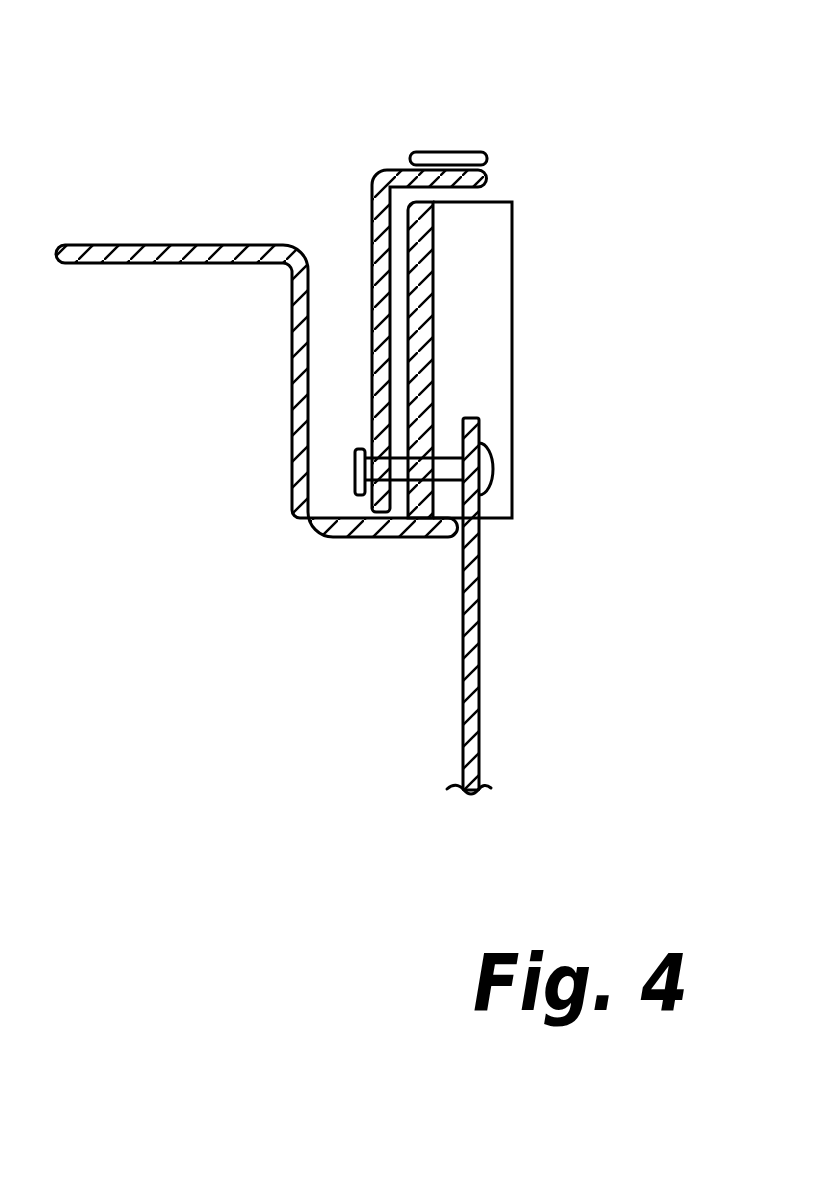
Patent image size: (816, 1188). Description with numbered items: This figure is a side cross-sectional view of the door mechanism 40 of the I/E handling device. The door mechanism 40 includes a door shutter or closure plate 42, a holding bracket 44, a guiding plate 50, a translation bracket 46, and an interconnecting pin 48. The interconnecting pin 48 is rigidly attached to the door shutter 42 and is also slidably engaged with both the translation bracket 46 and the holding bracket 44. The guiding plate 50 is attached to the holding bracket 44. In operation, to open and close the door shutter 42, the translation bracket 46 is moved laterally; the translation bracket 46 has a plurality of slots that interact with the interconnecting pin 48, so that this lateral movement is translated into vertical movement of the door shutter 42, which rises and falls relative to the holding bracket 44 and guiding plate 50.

The door mechanism 40 is at (620, 136).
The door shutter 42 is at (476, 665).
The holding bracket 44 is at (177, 264).
The translation bracket 46 is at (372, 202).
The interconnecting pin 48 is at (492, 468).
The guiding plate 50 is at (430, 298).